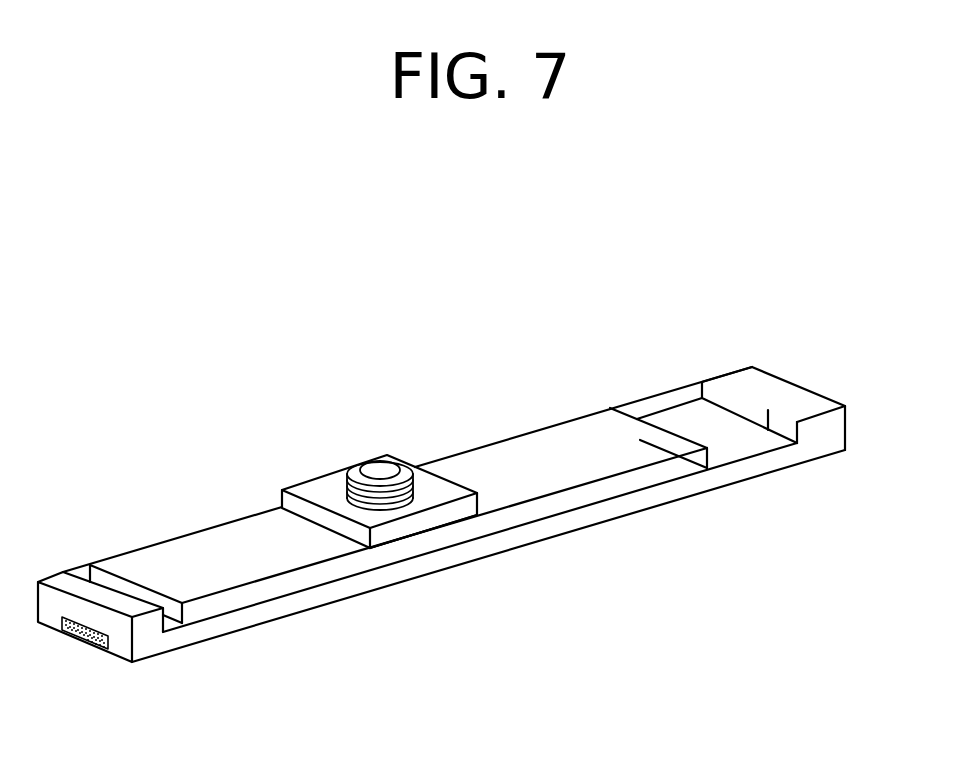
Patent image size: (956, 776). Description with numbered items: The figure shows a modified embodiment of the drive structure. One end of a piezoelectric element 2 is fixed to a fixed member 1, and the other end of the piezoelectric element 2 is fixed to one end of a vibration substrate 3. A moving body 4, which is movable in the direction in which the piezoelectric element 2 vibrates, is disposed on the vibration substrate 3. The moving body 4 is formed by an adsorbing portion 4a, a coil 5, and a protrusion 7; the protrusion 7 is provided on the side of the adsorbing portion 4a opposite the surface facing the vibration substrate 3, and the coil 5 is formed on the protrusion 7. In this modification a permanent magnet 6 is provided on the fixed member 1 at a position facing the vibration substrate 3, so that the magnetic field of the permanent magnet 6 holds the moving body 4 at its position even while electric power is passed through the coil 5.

The fixed member 1 is at (785, 402).
The piezoelectric element 2 is at (682, 417).
The vibration substrate 3 is at (585, 466).
The moving body 4 is at (313, 488).
The adsorbing portion 4a is at (427, 518).
The coil 5 is at (345, 481).
The permanent magnet 6 is at (75, 640).
The protrusion 7 is at (377, 470).